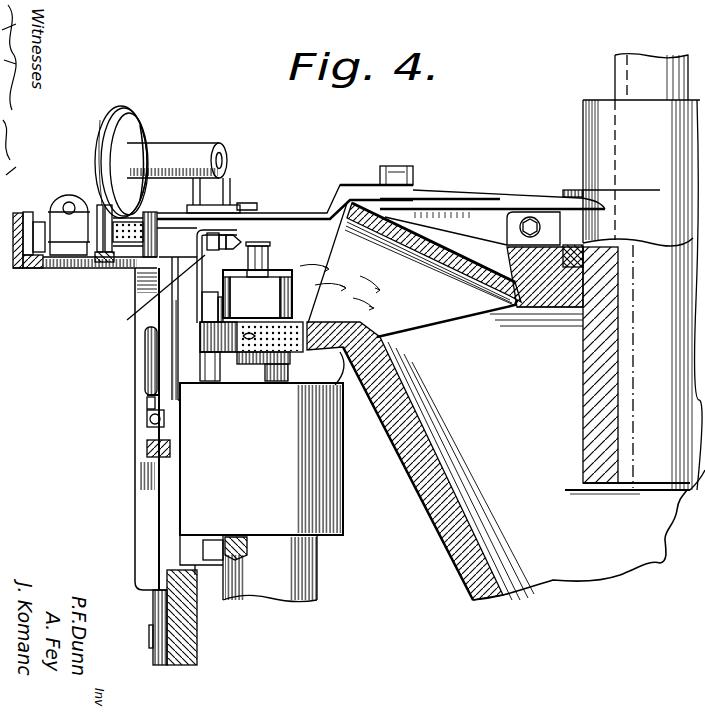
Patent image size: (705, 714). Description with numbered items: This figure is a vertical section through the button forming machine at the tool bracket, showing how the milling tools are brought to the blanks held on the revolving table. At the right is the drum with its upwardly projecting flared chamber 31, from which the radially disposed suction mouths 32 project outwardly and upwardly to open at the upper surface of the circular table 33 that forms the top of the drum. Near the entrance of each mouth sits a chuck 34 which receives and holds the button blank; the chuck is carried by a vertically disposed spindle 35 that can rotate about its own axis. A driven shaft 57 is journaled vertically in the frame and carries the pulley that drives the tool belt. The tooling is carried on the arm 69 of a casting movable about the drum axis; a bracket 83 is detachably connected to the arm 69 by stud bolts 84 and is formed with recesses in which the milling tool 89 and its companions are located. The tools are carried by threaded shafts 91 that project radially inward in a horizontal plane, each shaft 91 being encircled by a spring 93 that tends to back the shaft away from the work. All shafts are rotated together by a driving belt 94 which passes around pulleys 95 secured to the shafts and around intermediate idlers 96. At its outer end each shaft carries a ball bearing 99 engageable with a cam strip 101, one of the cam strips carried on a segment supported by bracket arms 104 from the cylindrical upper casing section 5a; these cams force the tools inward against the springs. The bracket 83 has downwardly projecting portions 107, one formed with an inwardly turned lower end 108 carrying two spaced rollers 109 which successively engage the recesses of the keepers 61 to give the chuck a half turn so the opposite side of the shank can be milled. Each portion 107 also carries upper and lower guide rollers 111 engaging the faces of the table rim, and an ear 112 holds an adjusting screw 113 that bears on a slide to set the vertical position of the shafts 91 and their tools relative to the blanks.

The flared chamber 31 is at (541, 327).
The suction mouths 32 is at (410, 263).
The circular table 33 is at (413, 461).
The chucks 34 is at (268, 253).
The spindles 35 is at (272, 356).
The shaft 57 is at (261, 459).
The keepers 61 is at (300, 577).
The arm 69 is at (485, 203).
The bracket 83 is at (290, 215).
The stud bolts 84 is at (397, 165).
The milling tool 89 is at (238, 240).
The threaded shafts 91 is at (145, 296).
The spring 93 is at (137, 248).
The driving belt 94 is at (118, 112).
The pulleys 95 is at (90, 258).
The idlers 96 is at (140, 136).
The ball bearing 99 is at (30, 270).
The cam strip 101 is at (30, 212).
The bracket arms 104 is at (150, 368).
The downwardly projecting portions 107 is at (167, 372).
The inwardly turned lower end 108 is at (195, 550).
The rollers 109 is at (228, 536).
The guide rollers 111 is at (217, 381).
The ear 112 is at (158, 453).
The adjusting screw 113 is at (137, 443).
The cylindrical upper casing section 5a is at (170, 627).